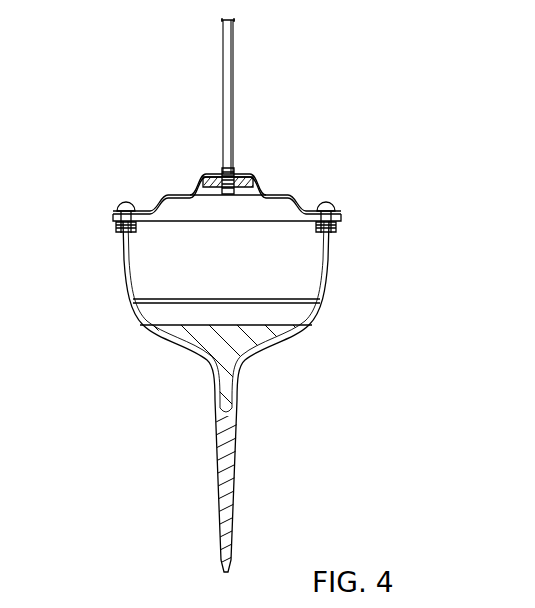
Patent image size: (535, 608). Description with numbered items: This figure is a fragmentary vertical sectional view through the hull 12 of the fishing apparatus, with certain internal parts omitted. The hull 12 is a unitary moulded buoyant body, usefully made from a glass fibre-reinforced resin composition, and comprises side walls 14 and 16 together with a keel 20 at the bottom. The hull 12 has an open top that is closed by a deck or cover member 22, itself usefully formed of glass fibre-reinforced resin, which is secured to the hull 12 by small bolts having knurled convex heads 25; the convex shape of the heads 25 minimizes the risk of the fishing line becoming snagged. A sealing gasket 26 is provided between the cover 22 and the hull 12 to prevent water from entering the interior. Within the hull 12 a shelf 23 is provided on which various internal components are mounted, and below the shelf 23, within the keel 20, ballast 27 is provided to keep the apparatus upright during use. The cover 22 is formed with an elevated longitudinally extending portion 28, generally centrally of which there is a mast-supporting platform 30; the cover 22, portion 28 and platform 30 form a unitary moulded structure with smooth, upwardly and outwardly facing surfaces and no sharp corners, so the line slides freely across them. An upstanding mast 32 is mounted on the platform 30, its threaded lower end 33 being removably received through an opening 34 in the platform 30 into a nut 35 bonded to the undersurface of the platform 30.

The hull 12 is at (403, 221).
The side wall 14 is at (124, 268).
The side wall 16 is at (328, 266).
The keel 20 is at (220, 483).
The deck or cover member 22 is at (232, 177).
The shelf 23 is at (255, 298).
The knurled convex head 25 is at (127, 203).
The sealing gasket 26 is at (115, 219).
The ballast 27 is at (262, 338).
The elevated longitudinally extending portion 28 is at (158, 198).
The mast-supporting platform 30 is at (262, 174).
The mast 32 is at (223, 93).
The threaded lower end 33 is at (237, 186).
The opening 34 is at (236, 168).
The nut 35 is at (212, 187).